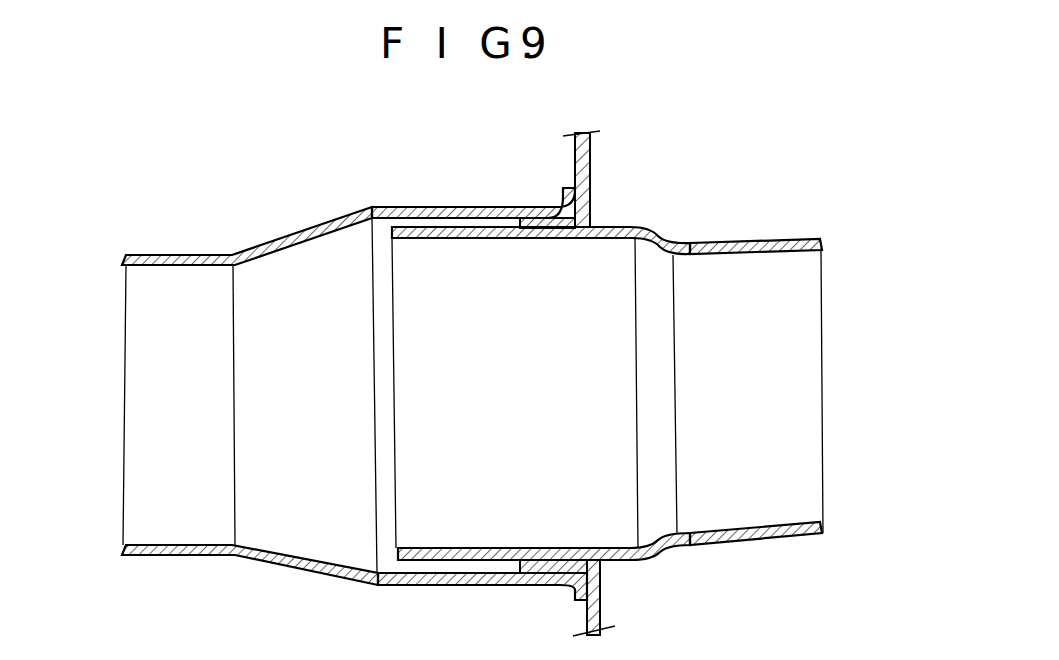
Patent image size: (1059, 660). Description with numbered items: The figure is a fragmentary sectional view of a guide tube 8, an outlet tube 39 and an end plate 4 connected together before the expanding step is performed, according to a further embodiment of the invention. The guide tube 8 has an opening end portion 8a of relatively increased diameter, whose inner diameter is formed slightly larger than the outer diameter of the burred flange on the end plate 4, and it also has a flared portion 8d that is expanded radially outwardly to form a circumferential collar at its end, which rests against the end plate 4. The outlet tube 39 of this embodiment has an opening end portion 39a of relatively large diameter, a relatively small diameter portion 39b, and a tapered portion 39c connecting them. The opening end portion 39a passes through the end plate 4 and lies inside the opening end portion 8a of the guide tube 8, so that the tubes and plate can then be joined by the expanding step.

The end plate 4 is at (598, 153).
The guide tube 8 is at (306, 223).
The opening end portion 8a is at (443, 208).
The flared portion 8d is at (570, 190).
The outlet tube 39 is at (728, 237).
The opening end portion 39a is at (612, 224).
The small diameter portion 39b is at (765, 535).
The tapered portion 39c is at (672, 542).